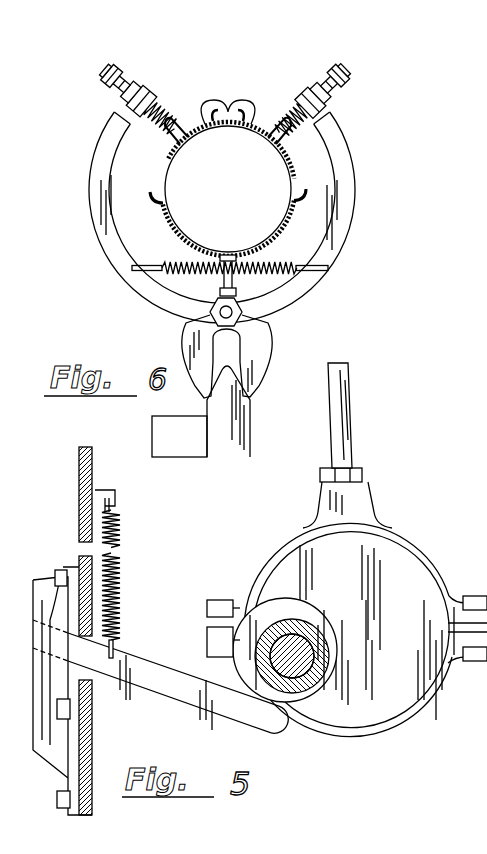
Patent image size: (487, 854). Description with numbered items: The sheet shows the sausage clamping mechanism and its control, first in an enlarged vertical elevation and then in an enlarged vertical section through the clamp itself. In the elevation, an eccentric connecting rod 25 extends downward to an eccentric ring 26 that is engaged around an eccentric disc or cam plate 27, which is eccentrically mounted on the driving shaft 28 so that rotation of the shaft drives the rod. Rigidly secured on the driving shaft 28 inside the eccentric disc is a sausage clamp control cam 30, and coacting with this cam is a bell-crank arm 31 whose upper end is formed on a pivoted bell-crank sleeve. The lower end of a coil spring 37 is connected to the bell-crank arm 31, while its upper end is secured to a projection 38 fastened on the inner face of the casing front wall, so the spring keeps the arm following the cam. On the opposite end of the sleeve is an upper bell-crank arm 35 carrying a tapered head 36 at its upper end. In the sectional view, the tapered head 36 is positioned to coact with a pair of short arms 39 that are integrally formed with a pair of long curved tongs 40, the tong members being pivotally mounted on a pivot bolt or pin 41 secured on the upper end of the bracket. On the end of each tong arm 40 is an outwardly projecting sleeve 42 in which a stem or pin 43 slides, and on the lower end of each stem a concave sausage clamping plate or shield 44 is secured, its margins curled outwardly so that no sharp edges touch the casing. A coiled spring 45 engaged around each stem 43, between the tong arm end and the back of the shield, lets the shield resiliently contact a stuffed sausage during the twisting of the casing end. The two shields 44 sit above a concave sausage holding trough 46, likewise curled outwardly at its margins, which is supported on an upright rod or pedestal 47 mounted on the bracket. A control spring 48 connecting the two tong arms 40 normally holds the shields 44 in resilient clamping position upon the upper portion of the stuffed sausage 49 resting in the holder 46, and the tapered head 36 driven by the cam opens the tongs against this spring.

In FIG. 5, the eccentric connecting rod 25 is at (345, 405).
In FIG. 5, the eccentric ring 26 is at (313, 530).
In FIG. 5, the eccentric disc or cam plate 27 is at (362, 543).
In FIG. 5, the driving shaft 28 is at (262, 666).
In FIG. 5, the sausage clamp control cam 30 is at (270, 608).
In FIG. 5, the bell-crank arm 31 is at (162, 688).
In FIG. 6, the upper bell-crank arm 35 is at (156, 424).
In FIG. 6, the tapered head 36 is at (245, 430).
In FIG. 5, the coil spring 37 is at (121, 598).
In FIG. 5, the projection 38 is at (128, 472).
In FIG. 6, the short arms 39 is at (190, 362).
In FIG. 6, the long curved tongs 40 is at (99, 212).
In FIG. 6, the pivot bolt or pin 41 is at (250, 325).
In FIG. 6, the outwardly projecting sleeve 42 is at (323, 94).
In FIG. 6, the stem or pin 43 is at (348, 72).
In FIG. 6, the sausage clamping plate or shield 44 is at (233, 108).
In FIG. 6, the coiled spring 45 is at (285, 124).
In FIG. 6, the sausage holding trough 46 is at (165, 236).
In FIG. 6, the upright rod or pedestal 47 is at (230, 284).
In FIG. 6, the control spring 48 is at (264, 262).
In FIG. 6, the stuffed sausage 49 is at (160, 193).